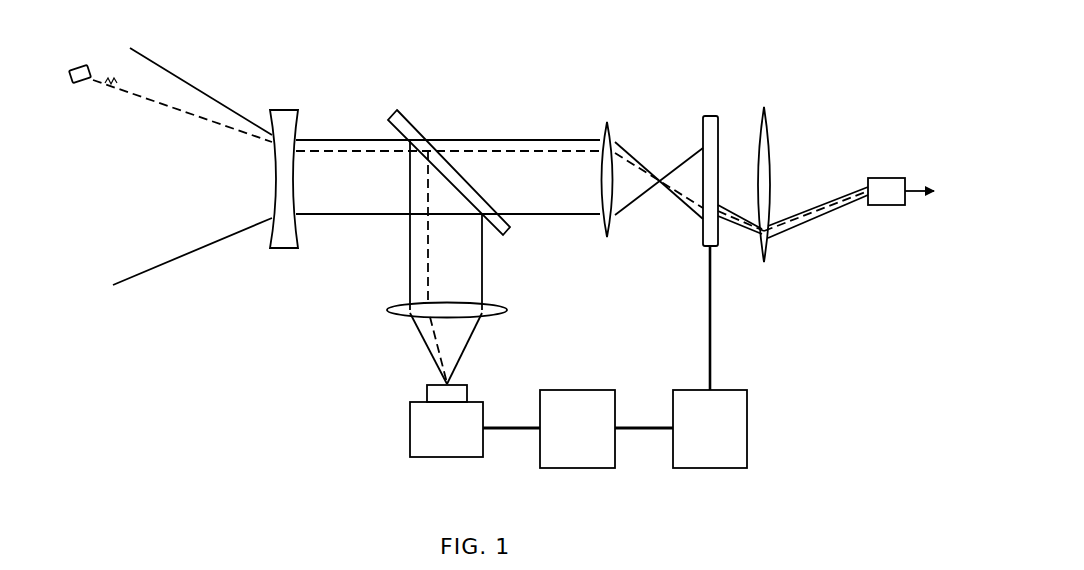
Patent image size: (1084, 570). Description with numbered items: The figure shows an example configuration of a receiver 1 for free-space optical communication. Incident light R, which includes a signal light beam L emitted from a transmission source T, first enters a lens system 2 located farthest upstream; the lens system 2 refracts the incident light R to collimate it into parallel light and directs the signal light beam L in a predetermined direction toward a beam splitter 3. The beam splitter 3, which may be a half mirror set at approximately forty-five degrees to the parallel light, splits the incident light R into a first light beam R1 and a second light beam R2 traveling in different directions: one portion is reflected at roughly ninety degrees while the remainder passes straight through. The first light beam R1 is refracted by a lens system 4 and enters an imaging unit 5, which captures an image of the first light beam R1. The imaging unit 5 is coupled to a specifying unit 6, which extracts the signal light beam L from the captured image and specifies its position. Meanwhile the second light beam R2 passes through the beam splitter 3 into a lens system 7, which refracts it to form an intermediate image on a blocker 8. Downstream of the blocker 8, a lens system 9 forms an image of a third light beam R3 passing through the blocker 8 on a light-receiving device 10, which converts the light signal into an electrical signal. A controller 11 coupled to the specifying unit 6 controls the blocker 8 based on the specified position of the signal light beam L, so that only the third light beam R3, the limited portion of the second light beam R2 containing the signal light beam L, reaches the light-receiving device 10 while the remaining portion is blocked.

The receiver 1 is at (528, 62).
The lens system 2 is at (296, 110).
The beam splitter 3 is at (410, 115).
The lens system 4 is at (503, 313).
The imaging unit 5 is at (484, 403).
The specifying unit 6 is at (602, 388).
The lens system 7 is at (612, 126).
The blocker 8 is at (717, 116).
The lens system 9 is at (770, 112).
The light-receiving device 10 is at (888, 178).
The controller 11 is at (733, 389).
The transmission source T is at (82, 66).
The signal light beam L is at (160, 104).
The incident light R is at (182, 238).
The first light beam R1 is at (473, 268).
The second light beam R2 is at (566, 204).
The third light beam R3 is at (743, 226).